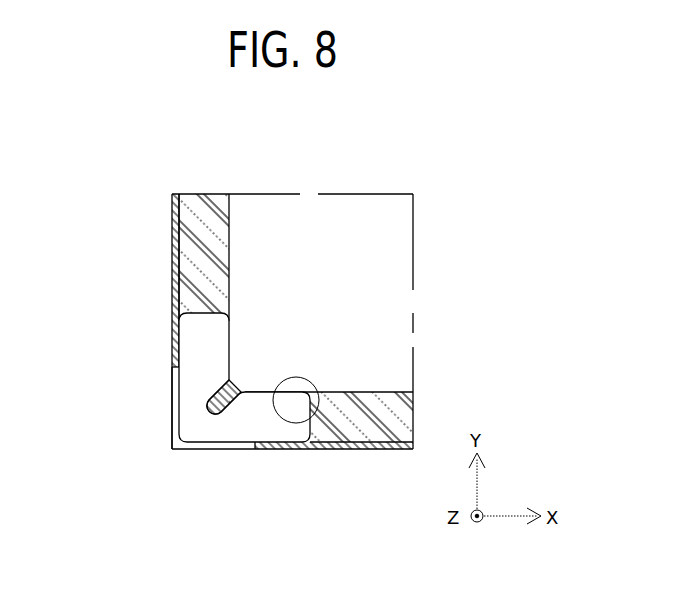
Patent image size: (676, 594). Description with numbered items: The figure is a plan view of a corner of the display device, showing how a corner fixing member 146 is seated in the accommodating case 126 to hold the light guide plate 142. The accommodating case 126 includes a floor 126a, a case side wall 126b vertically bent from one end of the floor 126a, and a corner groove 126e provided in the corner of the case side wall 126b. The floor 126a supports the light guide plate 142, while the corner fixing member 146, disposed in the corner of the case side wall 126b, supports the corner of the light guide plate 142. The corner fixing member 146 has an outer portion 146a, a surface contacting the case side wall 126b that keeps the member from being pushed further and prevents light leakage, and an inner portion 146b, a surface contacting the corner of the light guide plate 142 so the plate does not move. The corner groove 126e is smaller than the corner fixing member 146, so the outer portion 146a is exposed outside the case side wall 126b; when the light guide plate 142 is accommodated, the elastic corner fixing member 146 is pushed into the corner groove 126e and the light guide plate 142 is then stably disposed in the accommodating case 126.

The accommodating case 126 is at (90, 250).
The floor 126a is at (193, 255).
The case side wall 126b is at (179, 297).
The corner groove 126e is at (173, 383).
The light guide plate 142 is at (397, 278).
The corner fixing member 146 is at (316, 521).
The outer portion 146a is at (243, 443).
The inner portion 146b is at (308, 436).